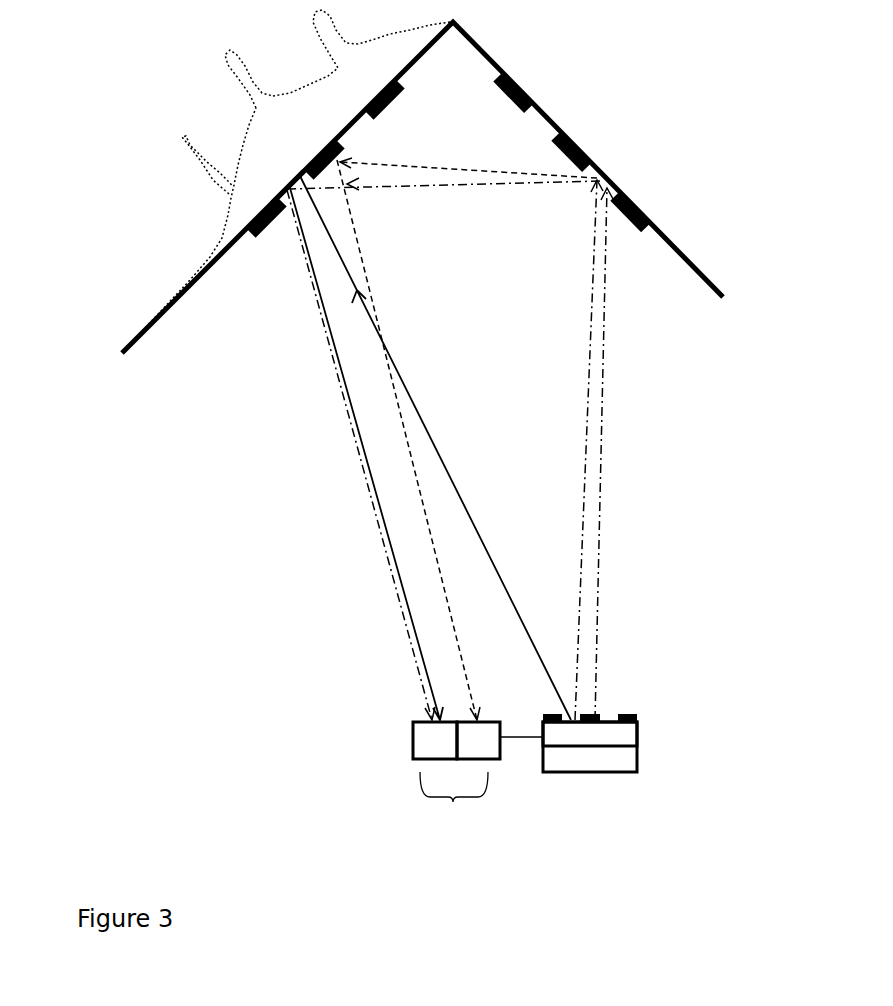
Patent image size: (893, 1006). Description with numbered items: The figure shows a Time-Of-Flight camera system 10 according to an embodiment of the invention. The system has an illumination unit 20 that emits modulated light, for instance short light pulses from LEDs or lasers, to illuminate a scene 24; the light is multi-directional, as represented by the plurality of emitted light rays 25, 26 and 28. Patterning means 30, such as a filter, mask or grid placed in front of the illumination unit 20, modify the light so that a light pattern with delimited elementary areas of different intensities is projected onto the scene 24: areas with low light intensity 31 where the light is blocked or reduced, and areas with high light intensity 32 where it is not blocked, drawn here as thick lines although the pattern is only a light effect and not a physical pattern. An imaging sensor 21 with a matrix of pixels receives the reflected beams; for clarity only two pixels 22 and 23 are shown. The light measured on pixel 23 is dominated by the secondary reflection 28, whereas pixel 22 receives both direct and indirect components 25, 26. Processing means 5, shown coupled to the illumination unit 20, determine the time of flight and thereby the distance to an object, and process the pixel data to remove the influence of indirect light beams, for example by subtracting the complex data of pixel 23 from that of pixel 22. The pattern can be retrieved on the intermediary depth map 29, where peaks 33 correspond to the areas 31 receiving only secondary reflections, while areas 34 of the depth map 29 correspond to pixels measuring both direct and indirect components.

The intermediary depth map 29 is at (239, 177).
The areas of the depth map 34 is at (240, 132).
The peaks 33 is at (185, 163).
The scene 24 is at (454, 187).
The area with low light intensity 31 is at (333, 157).
The area with high light intensity 32 is at (288, 188).
The emitted light ray 26 is at (343, 407).
The emitted light ray 25 is at (432, 447).
The secondary reflection 28 is at (595, 443).
The TOF camera system 10 is at (606, 713).
The processing means 5 is at (630, 760).
The illumination unit 20 is at (627, 730).
The patterning means 30 is at (637, 716).
The imaging sensor 21 is at (454, 819).
The pixel 22 is at (420, 742).
The pixel 23 is at (482, 742).